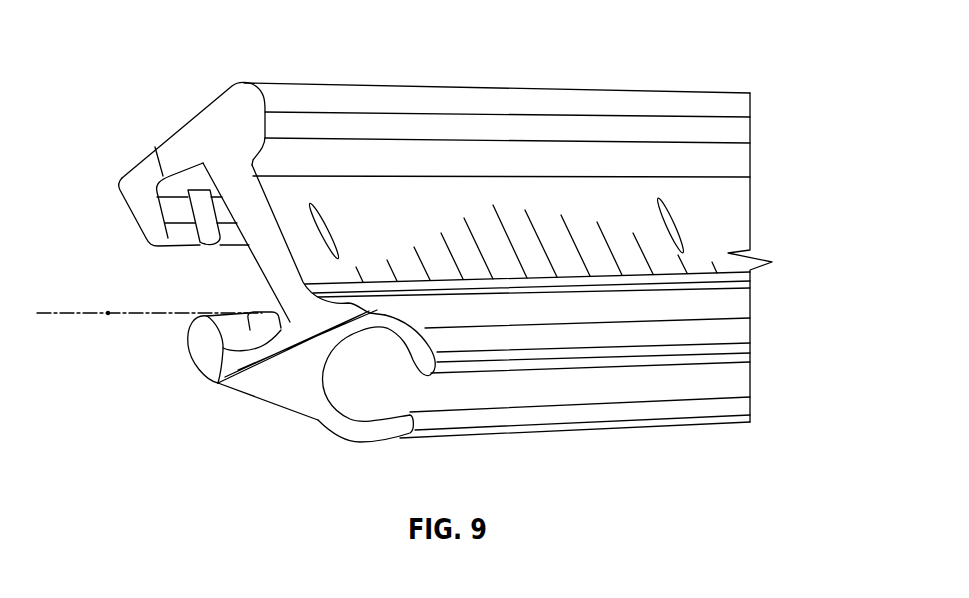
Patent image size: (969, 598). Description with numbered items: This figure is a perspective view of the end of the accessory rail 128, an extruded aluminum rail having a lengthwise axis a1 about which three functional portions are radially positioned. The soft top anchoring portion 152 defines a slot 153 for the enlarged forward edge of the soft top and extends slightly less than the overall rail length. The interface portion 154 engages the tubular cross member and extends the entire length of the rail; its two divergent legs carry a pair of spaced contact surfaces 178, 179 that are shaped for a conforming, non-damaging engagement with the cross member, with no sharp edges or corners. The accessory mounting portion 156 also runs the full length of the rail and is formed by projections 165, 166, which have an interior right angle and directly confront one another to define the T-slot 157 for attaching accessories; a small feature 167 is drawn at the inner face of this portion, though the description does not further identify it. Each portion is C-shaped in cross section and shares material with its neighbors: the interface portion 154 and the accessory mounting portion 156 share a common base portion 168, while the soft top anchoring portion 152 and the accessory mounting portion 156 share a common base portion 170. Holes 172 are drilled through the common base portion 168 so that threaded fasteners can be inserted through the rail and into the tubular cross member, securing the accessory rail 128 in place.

The accessory rail 128 is at (225, 86).
The soft top anchoring portion 152 is at (641, 441).
The slot 153 is at (502, 388).
The interface portion 154 is at (405, 147).
The accessory mounting portion 156 is at (146, 291).
The T-slot 157 is at (215, 293).
The projection 165 is at (145, 205).
The projection 166 is at (203, 338).
The projection 167 is at (210, 232).
The common base portion 168 is at (510, 210).
The common base portion 170 is at (274, 385).
The holes 172 is at (313, 203).
The contact surface 178 is at (472, 128).
The contact surface 179 is at (715, 310).
The axis a1 is at (82, 313).